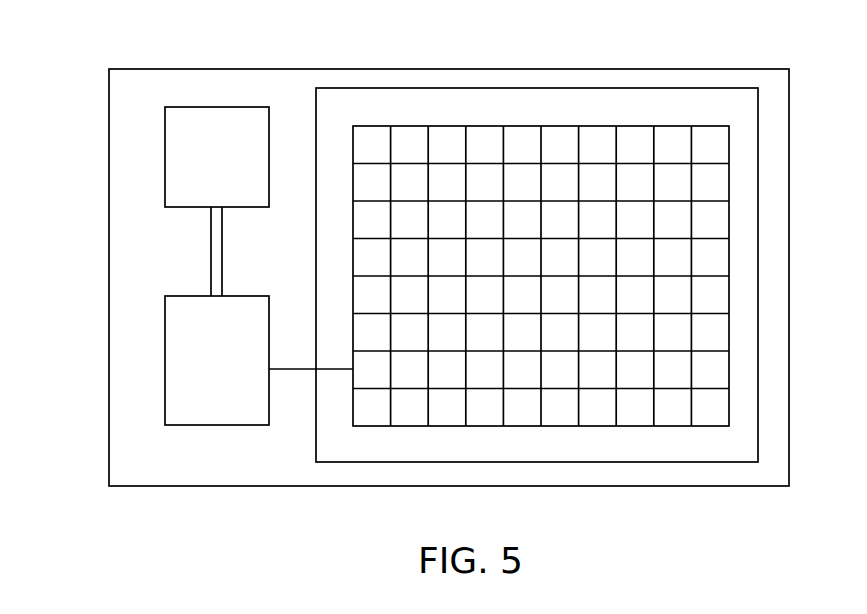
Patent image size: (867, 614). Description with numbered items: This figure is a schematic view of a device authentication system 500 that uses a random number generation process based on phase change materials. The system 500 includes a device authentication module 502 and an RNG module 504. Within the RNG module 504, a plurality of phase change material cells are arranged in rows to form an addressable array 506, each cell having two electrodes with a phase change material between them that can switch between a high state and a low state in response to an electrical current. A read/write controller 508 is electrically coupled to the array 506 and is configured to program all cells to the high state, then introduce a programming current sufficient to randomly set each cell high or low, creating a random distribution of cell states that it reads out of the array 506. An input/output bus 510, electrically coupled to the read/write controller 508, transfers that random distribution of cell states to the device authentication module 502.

The device authentication system 500 is at (277, 486).
The device authentication module 502 is at (223, 107).
The RNG module 504 is at (652, 88).
The addressable array 506 is at (445, 126).
The read/write controller 508 is at (165, 363).
The input/output bus 510 is at (208, 267).